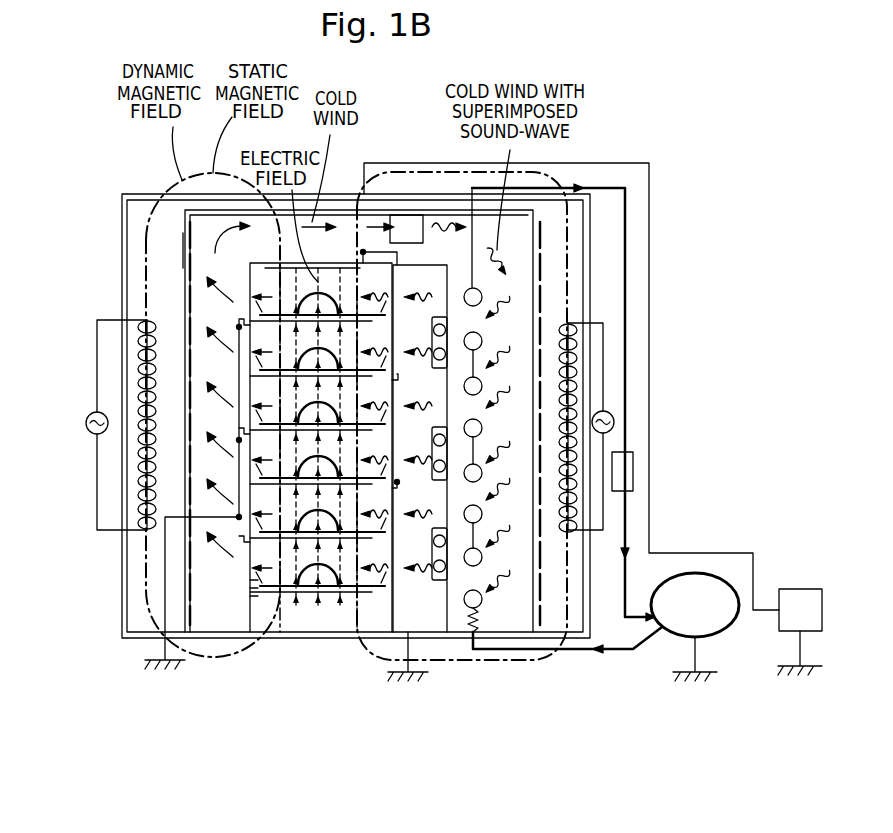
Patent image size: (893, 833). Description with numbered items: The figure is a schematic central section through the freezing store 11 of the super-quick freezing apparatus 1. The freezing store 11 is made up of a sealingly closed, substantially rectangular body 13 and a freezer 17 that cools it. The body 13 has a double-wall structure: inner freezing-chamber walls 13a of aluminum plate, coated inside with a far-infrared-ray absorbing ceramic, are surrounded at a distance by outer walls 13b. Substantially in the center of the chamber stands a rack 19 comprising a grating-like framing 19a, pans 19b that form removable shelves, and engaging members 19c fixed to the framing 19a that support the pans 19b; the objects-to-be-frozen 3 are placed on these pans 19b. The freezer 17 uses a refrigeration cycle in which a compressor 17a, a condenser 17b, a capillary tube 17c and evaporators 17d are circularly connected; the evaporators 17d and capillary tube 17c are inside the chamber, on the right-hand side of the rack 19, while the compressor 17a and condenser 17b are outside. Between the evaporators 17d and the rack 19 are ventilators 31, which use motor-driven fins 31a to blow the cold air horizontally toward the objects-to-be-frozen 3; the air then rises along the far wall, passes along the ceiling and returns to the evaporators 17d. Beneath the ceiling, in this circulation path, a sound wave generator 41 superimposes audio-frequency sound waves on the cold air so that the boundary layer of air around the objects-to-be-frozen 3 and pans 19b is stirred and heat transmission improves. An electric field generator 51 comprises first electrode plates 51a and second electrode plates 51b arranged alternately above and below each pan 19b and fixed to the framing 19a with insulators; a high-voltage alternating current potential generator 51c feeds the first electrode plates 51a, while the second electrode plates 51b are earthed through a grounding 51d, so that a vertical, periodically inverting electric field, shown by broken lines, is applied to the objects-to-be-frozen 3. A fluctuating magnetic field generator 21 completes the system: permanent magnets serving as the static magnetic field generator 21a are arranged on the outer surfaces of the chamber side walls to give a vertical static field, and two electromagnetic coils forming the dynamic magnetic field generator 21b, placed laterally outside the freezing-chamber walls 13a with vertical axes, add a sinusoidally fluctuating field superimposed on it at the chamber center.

The super-quick freezing apparatus 1 is at (660, 157).
The object-to-be-frozen 3 is at (341, 515).
The freezing store 11 is at (766, 235).
The body 13 is at (716, 228).
The freezing-chamber walls 13a is at (544, 248).
The outer walls 13b is at (592, 277).
The freezer 17 is at (716, 400).
The compressor 17a is at (634, 451).
The condenser 17b is at (692, 588).
The capillary tube 17c is at (478, 622).
The evaporators 17d is at (483, 296).
The rack 19 is at (210, 494).
The framing 19a is at (256, 587).
The pans 19b is at (257, 573).
The engaging members 19c is at (258, 590).
The fluctuating magnetic field generator 21 is at (104, 379).
The permanent magnet 21a is at (182, 267).
The electromagnetic coil 21b is at (135, 316).
The ventilators 31 is at (584, 503).
The fins 31a is at (448, 565).
The sound wave generator 41 is at (412, 215).
The electric field generator 51 is at (496, 768).
The first electrode plates 51a is at (325, 578).
The second electrode plates 51b is at (345, 480).
The high-voltage alternating current potential generator 51c is at (795, 620).
The grounding 51d is at (183, 650).